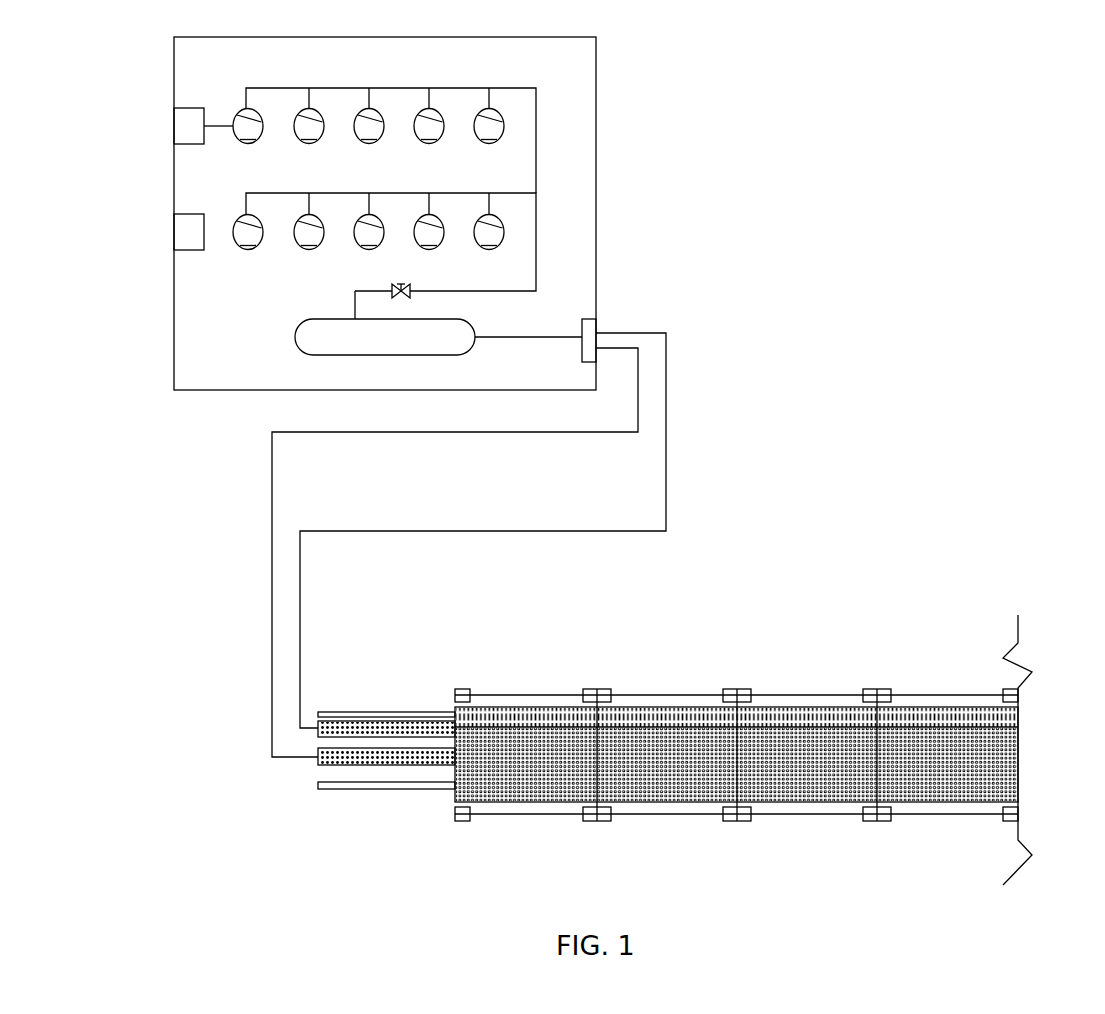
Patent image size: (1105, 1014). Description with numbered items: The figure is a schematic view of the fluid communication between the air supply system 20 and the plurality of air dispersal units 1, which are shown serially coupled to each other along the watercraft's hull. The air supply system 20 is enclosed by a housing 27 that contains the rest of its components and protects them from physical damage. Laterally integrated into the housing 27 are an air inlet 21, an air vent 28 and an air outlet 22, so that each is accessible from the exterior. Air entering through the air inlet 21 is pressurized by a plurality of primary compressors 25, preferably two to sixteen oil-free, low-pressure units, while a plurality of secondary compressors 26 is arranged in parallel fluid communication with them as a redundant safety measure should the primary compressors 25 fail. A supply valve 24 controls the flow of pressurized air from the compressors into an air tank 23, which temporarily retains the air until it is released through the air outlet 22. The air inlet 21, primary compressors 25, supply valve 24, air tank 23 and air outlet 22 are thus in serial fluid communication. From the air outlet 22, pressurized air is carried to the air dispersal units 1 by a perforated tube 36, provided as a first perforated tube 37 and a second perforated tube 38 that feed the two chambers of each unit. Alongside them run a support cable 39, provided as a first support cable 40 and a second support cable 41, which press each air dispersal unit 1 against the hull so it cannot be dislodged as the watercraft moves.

The air dispersal unit 1 is at (640, 702).
The air supply system 20 is at (658, 104).
The air inlet 21 is at (182, 122).
The air outlet 22 is at (590, 330).
The air tank 23 is at (302, 337).
The supply valve 24 is at (395, 288).
The primary compressors 25 is at (257, 133).
The secondary compressors 26 is at (305, 238).
The housing 27 is at (587, 170).
The air vent 28 is at (182, 232).
The perforated tube 36 is at (340, 726).
The first perforated tube 37 is at (318, 767).
The second perforated tube 38 is at (342, 722).
The support cable 39 is at (396, 751).
The first support cable 40 is at (403, 785).
The second support cable 41 is at (382, 713).